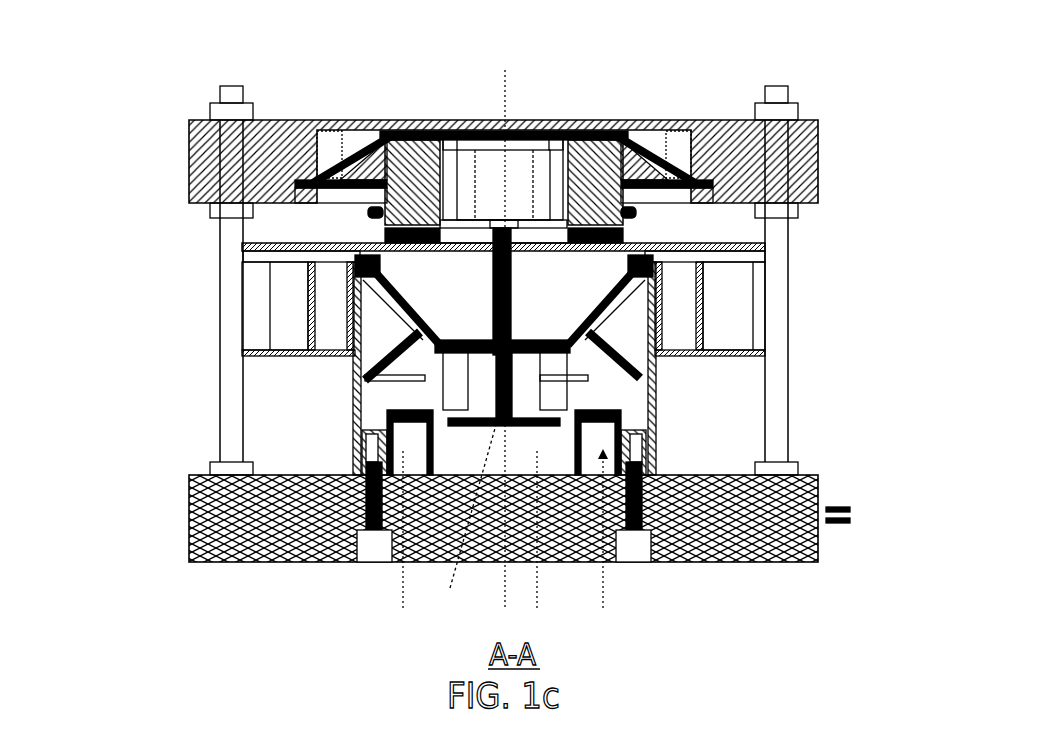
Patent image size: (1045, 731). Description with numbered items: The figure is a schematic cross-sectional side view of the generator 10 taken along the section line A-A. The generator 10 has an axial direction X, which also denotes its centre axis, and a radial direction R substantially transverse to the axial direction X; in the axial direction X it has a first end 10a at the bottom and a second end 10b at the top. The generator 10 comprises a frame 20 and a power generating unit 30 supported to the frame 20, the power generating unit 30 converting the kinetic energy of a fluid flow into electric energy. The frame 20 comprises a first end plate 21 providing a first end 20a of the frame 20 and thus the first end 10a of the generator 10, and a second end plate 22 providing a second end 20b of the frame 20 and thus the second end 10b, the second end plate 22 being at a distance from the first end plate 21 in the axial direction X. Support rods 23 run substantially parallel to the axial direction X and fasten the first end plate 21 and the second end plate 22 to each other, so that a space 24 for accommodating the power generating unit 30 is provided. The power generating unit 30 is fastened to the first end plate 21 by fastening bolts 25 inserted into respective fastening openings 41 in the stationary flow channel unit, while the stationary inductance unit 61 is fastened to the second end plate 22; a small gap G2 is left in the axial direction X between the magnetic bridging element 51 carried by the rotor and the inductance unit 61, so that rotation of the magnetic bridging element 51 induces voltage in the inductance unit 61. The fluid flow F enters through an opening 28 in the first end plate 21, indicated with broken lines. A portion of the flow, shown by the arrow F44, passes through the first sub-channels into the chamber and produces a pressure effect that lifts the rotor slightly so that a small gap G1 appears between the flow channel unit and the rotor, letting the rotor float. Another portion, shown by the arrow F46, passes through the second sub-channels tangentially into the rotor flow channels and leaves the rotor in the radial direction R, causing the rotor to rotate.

The generator 10 is at (188, 40).
The first end of the generator 10a is at (742, 568).
The second end of the generator 10b is at (445, 76).
The frame 20 is at (197, 280).
The first end of the frame 20a is at (243, 570).
The second end of the frame 20b is at (347, 96).
The first end plate 21 is at (189, 530).
The second end plate 22 is at (189, 162).
The support rods 23 is at (230, 343).
The space 24 is at (740, 422).
The fastening bolts 25 is at (327, 548).
The opening 28 is at (578, 570).
The power generating unit 30 is at (305, 405).
The fastening openings 41 is at (374, 448).
The magnetic bridging element 51 is at (385, 238).
The inductance unit 61 is at (536, 165).
The fluid flow F is at (400, 587).
The fluid flow through the first sub-channels F44 is at (463, 504).
The fluid flow through the second sub-channels F46 is at (392, 350).
The gap G1 is at (580, 343).
The gap G2 is at (627, 229).
The radial direction R is at (741, 103).
The axial direction X is at (507, 88).